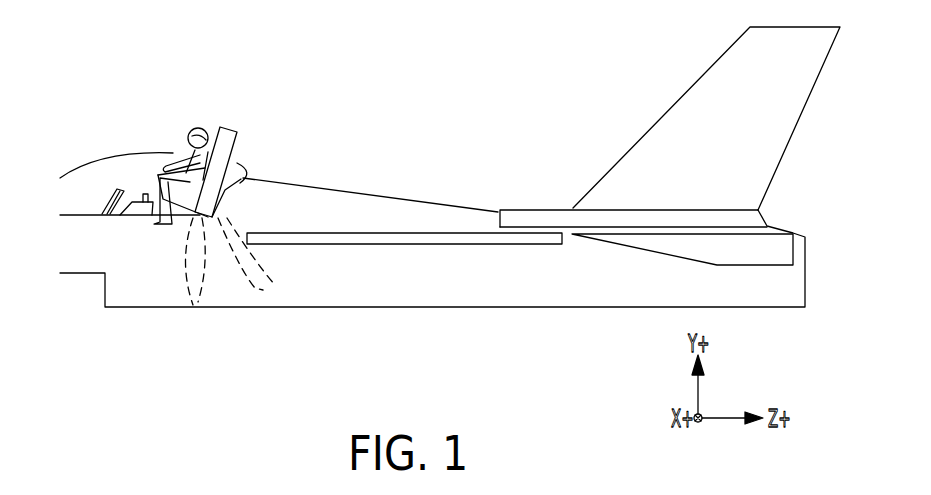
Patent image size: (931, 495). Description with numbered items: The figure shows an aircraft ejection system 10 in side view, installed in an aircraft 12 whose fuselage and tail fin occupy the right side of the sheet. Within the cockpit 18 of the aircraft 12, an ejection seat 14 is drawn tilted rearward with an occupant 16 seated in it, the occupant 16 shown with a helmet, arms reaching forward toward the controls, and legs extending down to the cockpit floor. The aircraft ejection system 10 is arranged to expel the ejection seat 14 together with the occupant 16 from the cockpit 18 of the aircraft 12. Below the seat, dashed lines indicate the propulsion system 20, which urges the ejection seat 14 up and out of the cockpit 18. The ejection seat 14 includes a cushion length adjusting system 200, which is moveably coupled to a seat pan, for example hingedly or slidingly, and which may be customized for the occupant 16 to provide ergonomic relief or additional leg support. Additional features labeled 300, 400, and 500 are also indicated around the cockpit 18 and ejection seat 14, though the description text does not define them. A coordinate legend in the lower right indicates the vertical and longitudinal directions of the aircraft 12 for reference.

The aircraft ejection system 10 is at (435, 167).
The aircraft 12 is at (464, 283).
The ejection seat 14 is at (232, 143).
The occupant 16 is at (190, 134).
The cockpit 18 is at (94, 198).
The propulsion system 20 is at (192, 263).
The cushion length adjusting system 200 is at (152, 155).
The canopy 300 is at (100, 160).
The ejection system 400 is at (155, 142).
The seat initiation system 500 is at (155, 200).